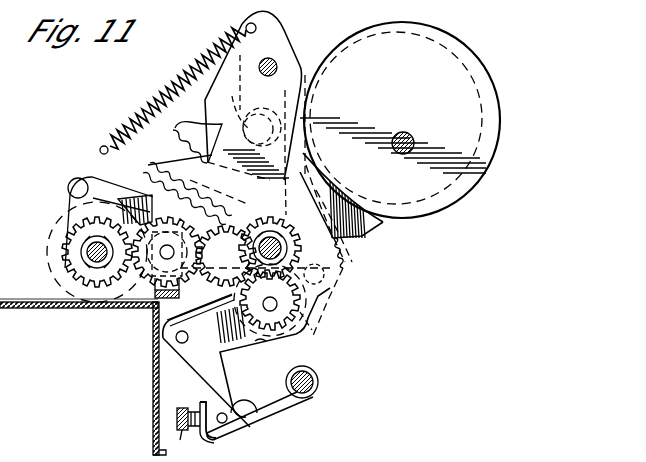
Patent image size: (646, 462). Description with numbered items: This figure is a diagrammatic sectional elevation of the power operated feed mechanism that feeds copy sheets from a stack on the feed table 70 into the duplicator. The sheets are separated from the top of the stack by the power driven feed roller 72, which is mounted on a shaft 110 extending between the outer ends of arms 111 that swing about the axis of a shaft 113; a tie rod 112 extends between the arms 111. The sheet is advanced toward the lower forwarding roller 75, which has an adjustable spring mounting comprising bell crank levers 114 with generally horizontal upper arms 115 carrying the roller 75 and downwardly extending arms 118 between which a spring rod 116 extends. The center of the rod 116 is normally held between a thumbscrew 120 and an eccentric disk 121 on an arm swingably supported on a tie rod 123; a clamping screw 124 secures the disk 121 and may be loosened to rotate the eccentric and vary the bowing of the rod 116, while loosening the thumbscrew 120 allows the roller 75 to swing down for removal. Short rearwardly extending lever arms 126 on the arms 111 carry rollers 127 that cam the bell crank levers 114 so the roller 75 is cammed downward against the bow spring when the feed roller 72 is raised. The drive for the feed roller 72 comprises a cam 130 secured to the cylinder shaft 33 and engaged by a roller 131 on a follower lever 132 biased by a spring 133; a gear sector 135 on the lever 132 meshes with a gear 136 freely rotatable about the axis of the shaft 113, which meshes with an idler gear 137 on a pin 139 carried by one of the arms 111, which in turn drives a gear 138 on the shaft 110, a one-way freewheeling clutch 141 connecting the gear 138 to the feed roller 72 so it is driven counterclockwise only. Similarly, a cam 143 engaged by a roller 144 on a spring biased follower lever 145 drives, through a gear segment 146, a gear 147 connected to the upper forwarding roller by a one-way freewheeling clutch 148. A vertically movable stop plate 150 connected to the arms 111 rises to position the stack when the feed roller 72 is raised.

The cylinder shaft 33 is at (409, 134).
The feed table 70 is at (36, 320).
The feed roller 72 is at (48, 237).
The lower forwarding roller 75 is at (316, 321).
The shaft 110 is at (87, 253).
The arms 111 is at (100, 192).
The tie rod 112 is at (68, 188).
The shaft 113 is at (268, 240).
The bell crank levers 114 is at (224, 355).
The upper arms 115 is at (257, 342).
The spring rod 116 is at (212, 427).
The downwardly extending arms 118 is at (190, 377).
The thumbscrew 120 is at (181, 440).
The eccentric disk 121 is at (250, 416).
The tie rod 123 is at (318, 383).
The clamping screw 124 is at (243, 404).
The lever arms 126 is at (324, 275).
The rollers 127 is at (326, 293).
The cam 130 is at (372, 227).
The roller 131 is at (236, 118).
The follower lever 132 is at (200, 124).
The spring 133 is at (240, 27).
The gear sector 135 is at (173, 135).
The gear 136 is at (341, 255).
The idler gear 137 is at (158, 197).
The gear 138 is at (66, 287).
The shaft or pin 139 is at (167, 245).
The one-way freewheeling clutch 141 is at (84, 236).
The cam 143 is at (473, 58).
The roller 144 is at (262, 102).
The follower lever 145 is at (150, 166).
The gear segment 146 is at (145, 176).
The gear 147 is at (246, 232).
The one-way freewheeling clutch 148 is at (248, 264).
The stop plate 150 is at (153, 364).